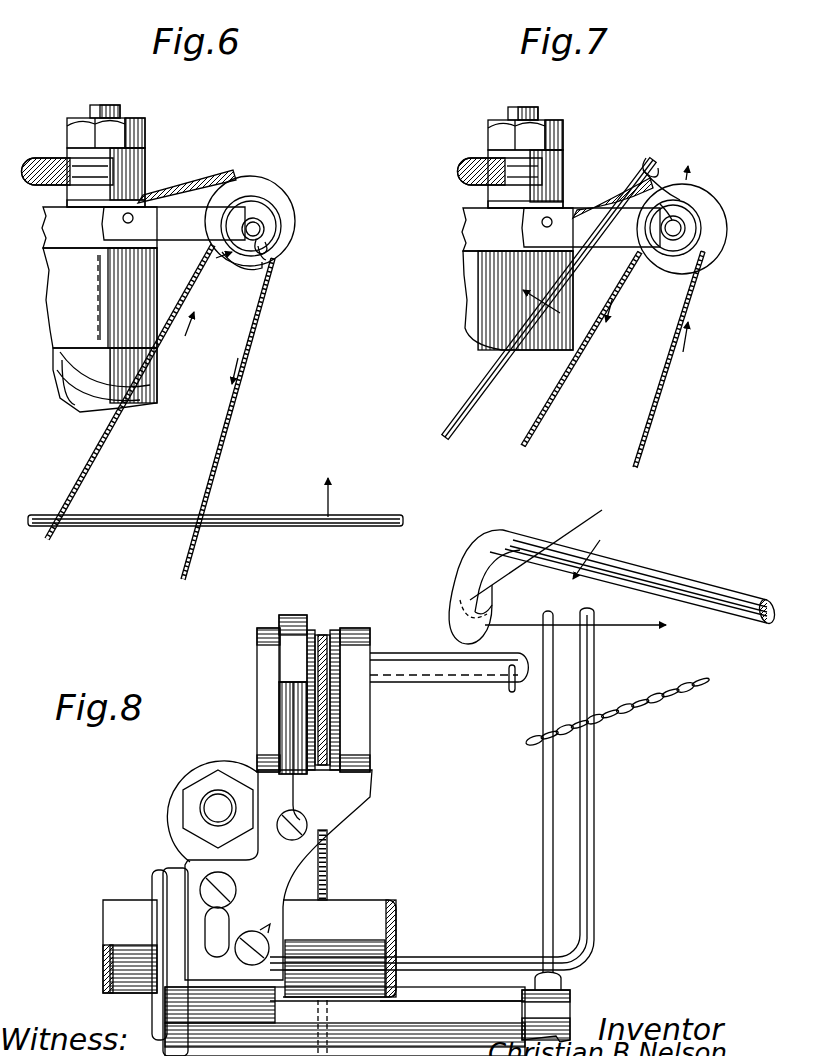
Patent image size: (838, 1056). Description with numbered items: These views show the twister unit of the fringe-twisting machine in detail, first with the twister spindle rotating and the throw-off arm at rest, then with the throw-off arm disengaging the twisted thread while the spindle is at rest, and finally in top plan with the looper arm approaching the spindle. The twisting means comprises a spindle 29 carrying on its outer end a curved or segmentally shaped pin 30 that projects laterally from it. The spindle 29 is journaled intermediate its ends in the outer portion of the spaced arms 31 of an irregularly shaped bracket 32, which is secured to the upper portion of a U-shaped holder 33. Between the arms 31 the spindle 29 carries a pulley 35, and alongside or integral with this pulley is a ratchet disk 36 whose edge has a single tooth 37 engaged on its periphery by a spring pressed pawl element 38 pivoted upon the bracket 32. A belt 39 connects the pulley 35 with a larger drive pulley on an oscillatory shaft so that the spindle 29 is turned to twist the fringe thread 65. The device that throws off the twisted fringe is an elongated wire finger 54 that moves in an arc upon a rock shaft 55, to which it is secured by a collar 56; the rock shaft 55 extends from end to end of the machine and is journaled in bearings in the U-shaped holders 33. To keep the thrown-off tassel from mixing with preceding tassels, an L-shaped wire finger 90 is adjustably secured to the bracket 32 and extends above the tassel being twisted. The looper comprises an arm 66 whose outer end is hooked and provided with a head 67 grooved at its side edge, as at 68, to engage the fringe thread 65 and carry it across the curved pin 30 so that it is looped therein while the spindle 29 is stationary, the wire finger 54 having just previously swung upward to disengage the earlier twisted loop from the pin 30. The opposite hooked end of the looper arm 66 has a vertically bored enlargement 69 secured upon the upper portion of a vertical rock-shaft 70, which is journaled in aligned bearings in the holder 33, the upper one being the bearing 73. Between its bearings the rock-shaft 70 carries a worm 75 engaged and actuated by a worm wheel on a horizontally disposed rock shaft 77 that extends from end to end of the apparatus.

In FIG. 6, the spindle 29 is at (265, 224).
In FIG. 7, the spindle 29 is at (668, 238).
In FIG. 8, the spindle 29 is at (455, 682).
In FIG. 6, the curved pin 30 is at (275, 260).
In FIG. 7, the curved pin 30 is at (675, 210).
In FIG. 8, the curved pin 30 is at (511, 688).
In FIG. 6, the spaced arms 31 is at (188, 240).
In FIG. 7, the spaced arms 31 is at (591, 227).
In FIG. 8, the spaced arms 31 is at (266, 690).
In FIG. 6, the bracket 32 is at (52, 226).
In FIG. 7, the bracket 32 is at (472, 230).
In FIG. 8, the bracket 32 is at (280, 866).
In FIG. 8, the U-shaped holder 33 is at (232, 1002).
In FIG. 6, the pulley 35 is at (256, 180).
In FIG. 7, the pulley 35 is at (700, 245).
In FIG. 8, the pulley 35 is at (332, 636).
In FIG. 6, the disk 36 is at (230, 262).
In FIG. 7, the disk 36 is at (722, 230).
In FIG. 8, the disk 36 is at (297, 615).
In FIG. 6, the tooth 37 is at (258, 280).
In FIG. 7, the tooth 37 is at (668, 175).
In FIG. 8, the tooth 37 is at (282, 676).
In FIG. 6, the pawl element 38 is at (224, 170).
In FIG. 7, the pawl element 38 is at (604, 205).
In FIG. 8, the pawl element 38 is at (283, 720).
In FIG. 6, the belt 39 is at (255, 351).
In FIG. 7, the belt 39 is at (668, 376).
In FIG. 8, the belt 39 is at (330, 890).
In FIG. 6, the wire finger 54 is at (215, 502).
In FIG. 7, the wire finger 54 is at (492, 372).
In FIG. 8, the wire finger 54 is at (543, 784).
In FIG. 8, the rock shaft 55 is at (466, 1012).
In FIG. 8, the collar 56 is at (572, 990).
In FIG. 6, the fringe thread 65 is at (270, 238).
In FIG. 7, the fringe thread 65 is at (651, 168).
In FIG. 8, the fringe thread 65 is at (603, 512).
In FIG. 6, the looper arm 66 is at (43, 158).
In FIG. 7, the looper arm 66 is at (463, 160).
In FIG. 8, the looper arm 66 is at (706, 585).
In FIG. 8, the head 67 is at (447, 618).
In FIG. 8, the groove 68 is at (495, 603).
In FIG. 8, the enlargement 69 is at (190, 770).
In FIG. 6, the rock-shaft 70 is at (80, 295).
In FIG. 7, the rock-shaft 70 is at (526, 107).
In FIG. 8, the rock-shaft 70 is at (215, 804).
In FIG. 6, the bearing 73 is at (140, 328).
In FIG. 7, the bearing 73 is at (476, 308).
In FIG. 6, the worm 75 is at (56, 388).
In FIG. 8, the rock shaft 77 is at (122, 910).
In FIG. 8, the wire finger 90 is at (595, 828).